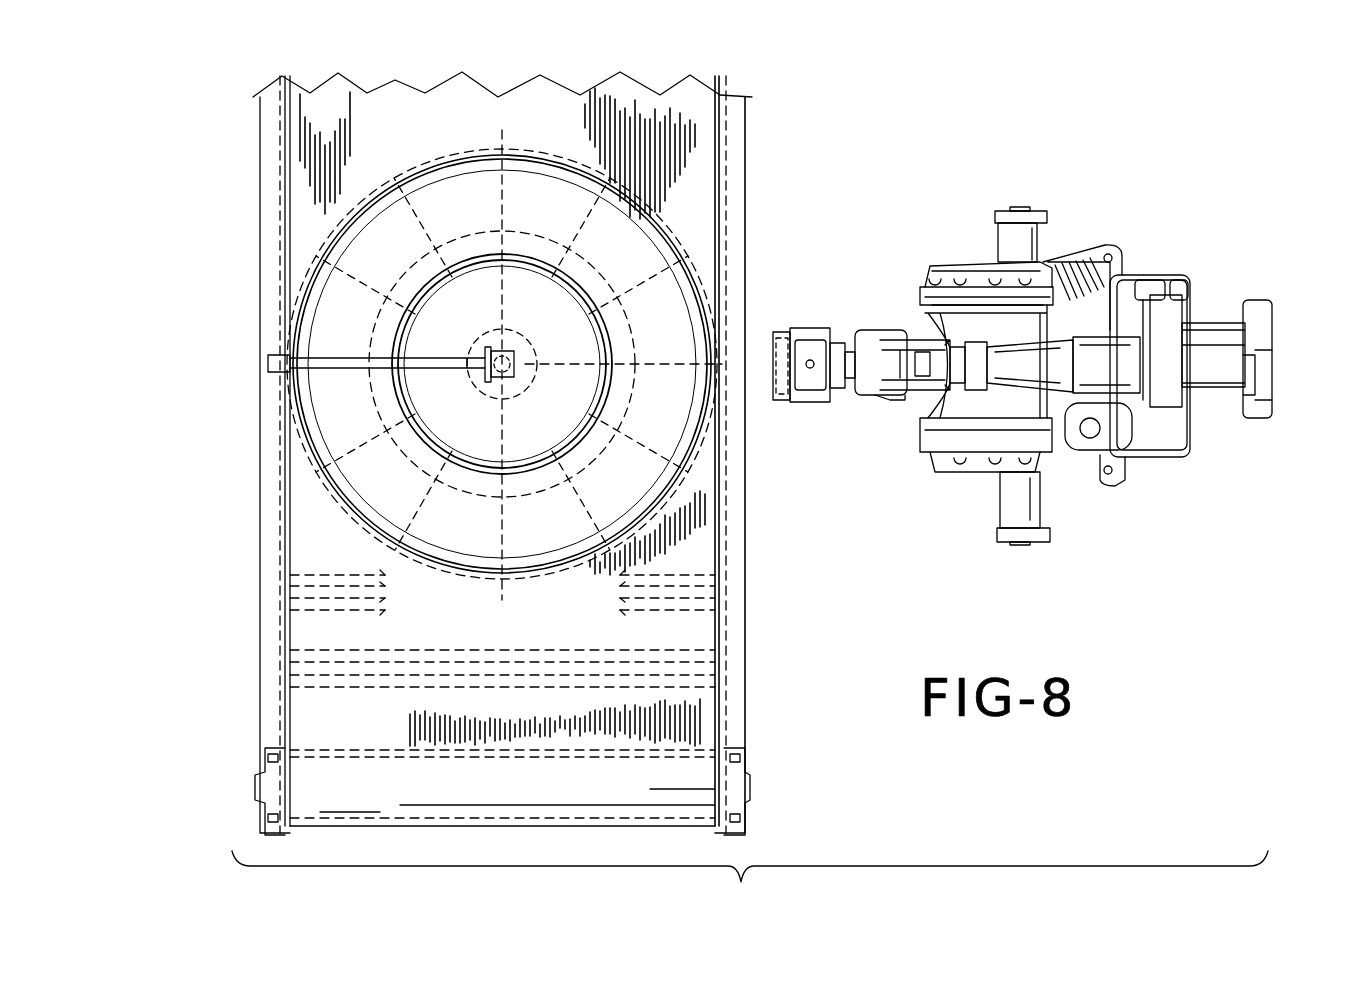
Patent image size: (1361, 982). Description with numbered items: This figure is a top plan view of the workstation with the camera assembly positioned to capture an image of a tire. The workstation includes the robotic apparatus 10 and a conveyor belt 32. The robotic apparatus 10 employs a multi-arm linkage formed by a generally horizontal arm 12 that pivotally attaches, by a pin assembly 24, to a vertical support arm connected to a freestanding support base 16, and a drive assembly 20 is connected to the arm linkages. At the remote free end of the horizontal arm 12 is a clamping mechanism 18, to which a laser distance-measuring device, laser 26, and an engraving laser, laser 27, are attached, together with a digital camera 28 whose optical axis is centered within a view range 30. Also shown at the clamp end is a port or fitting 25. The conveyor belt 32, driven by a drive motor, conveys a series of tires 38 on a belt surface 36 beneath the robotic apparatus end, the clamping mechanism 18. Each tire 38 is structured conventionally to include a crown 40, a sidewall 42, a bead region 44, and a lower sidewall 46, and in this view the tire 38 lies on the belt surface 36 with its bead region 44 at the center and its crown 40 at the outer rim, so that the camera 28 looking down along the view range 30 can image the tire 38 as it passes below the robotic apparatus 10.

The robotic apparatus 10 is at (1247, 243).
The horizontal arm 12 is at (1040, 362).
The support base 16 is at (1108, 492).
The clamping mechanism 18 is at (877, 393).
The drive assembly 20 is at (945, 472).
The pin assembly 24 is at (1256, 336).
The ports 25 is at (1008, 250).
The laser 26 is at (786, 360).
The laser 27 is at (817, 348).
The digital camera 28 is at (510, 362).
The view range 30 is at (507, 200).
The conveyor belt 32 is at (258, 201).
The belt surface 36 is at (325, 545).
The tire 38 is at (392, 206).
The crown 40 is at (538, 565).
The sidewall 42 is at (462, 540).
The bead region 44 is at (423, 432).
The lower sidewall 46 is at (573, 469).